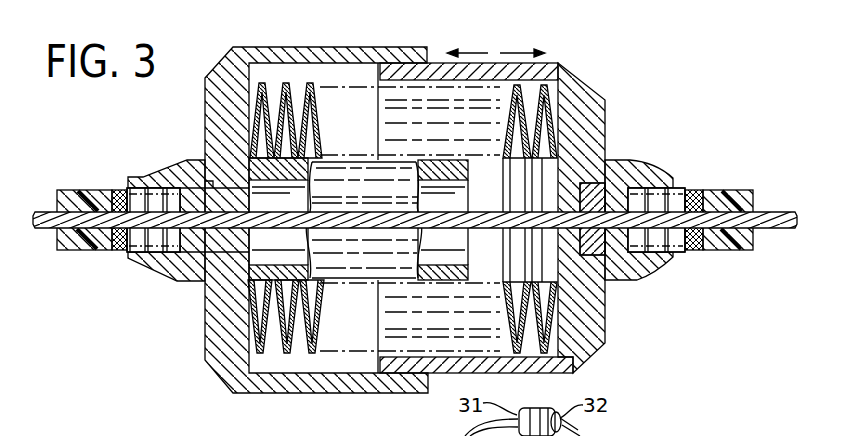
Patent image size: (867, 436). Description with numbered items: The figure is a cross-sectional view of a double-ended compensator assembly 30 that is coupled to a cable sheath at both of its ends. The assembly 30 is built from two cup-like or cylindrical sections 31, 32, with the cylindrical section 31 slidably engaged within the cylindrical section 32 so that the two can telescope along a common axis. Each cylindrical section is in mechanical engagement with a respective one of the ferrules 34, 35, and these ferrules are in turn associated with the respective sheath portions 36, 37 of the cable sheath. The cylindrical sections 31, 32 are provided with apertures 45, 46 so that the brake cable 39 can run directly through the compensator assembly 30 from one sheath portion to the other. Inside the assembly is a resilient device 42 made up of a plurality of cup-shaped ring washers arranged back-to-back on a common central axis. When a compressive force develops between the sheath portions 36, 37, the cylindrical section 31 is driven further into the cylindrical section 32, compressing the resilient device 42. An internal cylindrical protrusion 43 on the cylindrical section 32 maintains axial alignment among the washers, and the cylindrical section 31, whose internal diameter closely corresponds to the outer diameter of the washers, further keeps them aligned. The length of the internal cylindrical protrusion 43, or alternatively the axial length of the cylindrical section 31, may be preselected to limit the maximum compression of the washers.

The compensator assembly 30 is at (664, 102).
The cylindrical section 31 is at (580, 95).
The cylindrical section 32 is at (225, 78).
The ferrule 34 is at (630, 163).
The ferrule 35 is at (162, 176).
The sheath portion 36 is at (715, 193).
The sheath portion 37 is at (97, 192).
The brake cable 39 is at (773, 220).
The resilient device 42 is at (498, 131).
The internal cylindrical protrusion 43 is at (393, 260).
The aperture 45 is at (567, 222).
The aperture 46 is at (236, 212).